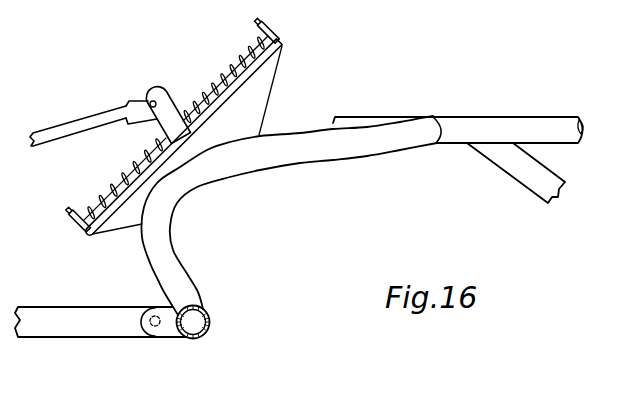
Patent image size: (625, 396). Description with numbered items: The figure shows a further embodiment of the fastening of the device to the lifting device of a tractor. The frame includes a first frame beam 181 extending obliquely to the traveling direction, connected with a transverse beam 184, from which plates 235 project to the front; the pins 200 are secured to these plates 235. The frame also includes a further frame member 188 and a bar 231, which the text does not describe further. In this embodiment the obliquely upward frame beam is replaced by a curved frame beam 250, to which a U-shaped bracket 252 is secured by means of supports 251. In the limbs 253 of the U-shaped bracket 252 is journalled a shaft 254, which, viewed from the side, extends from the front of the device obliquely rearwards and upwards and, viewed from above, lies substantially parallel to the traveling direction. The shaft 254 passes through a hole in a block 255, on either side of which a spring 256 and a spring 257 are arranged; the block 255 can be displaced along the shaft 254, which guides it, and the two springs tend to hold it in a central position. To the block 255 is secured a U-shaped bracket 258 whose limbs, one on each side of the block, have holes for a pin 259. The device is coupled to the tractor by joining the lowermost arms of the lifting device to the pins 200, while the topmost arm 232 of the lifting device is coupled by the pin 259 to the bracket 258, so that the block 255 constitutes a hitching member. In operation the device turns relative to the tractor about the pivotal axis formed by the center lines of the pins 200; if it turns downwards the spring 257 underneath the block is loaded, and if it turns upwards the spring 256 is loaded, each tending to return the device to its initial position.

The first frame beam 181 is at (508, 122).
The transverse beam 184 is at (210, 323).
The branch tube 188 is at (518, 171).
The pins 200 is at (154, 338).
The link bar 231 is at (62, 329).
The topmost arm 232 is at (64, 128).
The plates 235 is at (172, 328).
The curved frame beam 250 is at (293, 158).
The supports 251 is at (265, 91).
The U-shaped bracket 252 is at (279, 52).
The limbs 253 is at (283, 34).
The shaft 254 is at (100, 193).
The block 255 is at (184, 110).
The spring 256 is at (213, 77).
The spring 257 is at (115, 175).
The U-shaped bracket 258 is at (160, 118).
The pin 259 is at (153, 101).